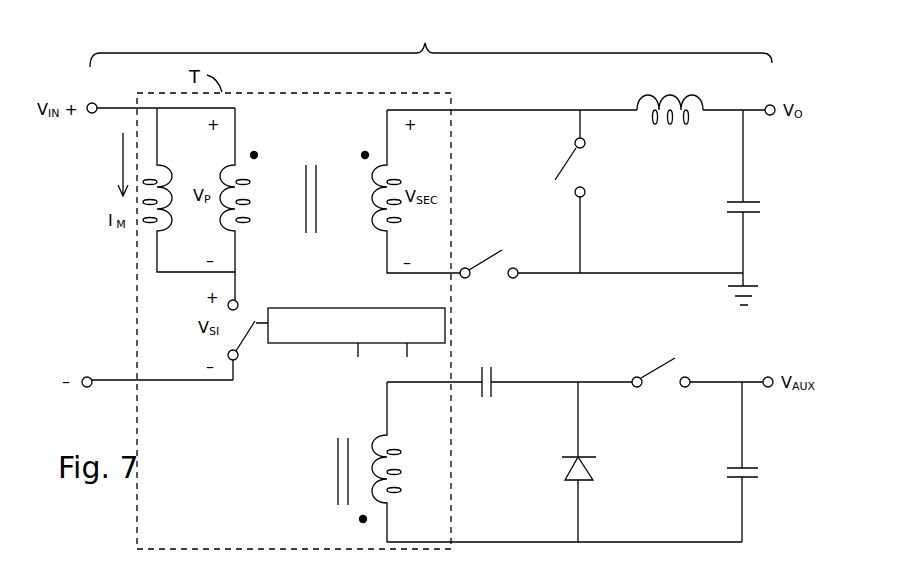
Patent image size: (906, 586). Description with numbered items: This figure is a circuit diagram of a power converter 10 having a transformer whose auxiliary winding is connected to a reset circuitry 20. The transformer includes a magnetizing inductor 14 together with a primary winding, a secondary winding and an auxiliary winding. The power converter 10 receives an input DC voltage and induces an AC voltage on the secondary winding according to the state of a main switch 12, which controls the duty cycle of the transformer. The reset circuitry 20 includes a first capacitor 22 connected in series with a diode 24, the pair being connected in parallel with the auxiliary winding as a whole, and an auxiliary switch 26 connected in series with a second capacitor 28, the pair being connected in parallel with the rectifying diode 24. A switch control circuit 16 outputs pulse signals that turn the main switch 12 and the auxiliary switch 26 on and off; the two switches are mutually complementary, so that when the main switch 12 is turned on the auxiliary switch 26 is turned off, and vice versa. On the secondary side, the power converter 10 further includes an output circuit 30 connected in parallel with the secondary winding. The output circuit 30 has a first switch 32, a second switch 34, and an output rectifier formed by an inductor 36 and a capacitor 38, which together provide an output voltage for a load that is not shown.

The power converter 10 is at (431, 43).
The main switch 12 is at (243, 348).
The magnetizing inductor 14 is at (168, 170).
The switch control circuit 16 is at (358, 308).
The reset circuitry 20 is at (455, 550).
The first capacitor 22 is at (491, 377).
The diode 24 is at (568, 468).
The auxiliary switch 26 is at (670, 362).
The second capacitor 28 is at (760, 473).
The output circuit 30 is at (482, 110).
The first switch 32 is at (482, 262).
The second switch 34 is at (586, 141).
The inductor 36 is at (703, 105).
The capacitor 38 is at (760, 208).